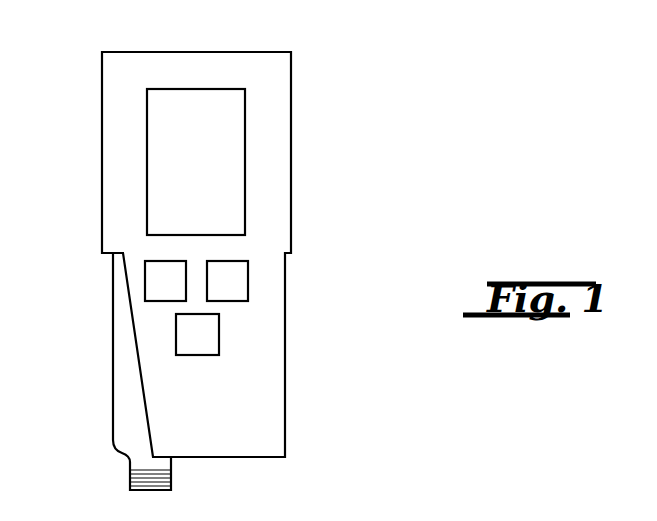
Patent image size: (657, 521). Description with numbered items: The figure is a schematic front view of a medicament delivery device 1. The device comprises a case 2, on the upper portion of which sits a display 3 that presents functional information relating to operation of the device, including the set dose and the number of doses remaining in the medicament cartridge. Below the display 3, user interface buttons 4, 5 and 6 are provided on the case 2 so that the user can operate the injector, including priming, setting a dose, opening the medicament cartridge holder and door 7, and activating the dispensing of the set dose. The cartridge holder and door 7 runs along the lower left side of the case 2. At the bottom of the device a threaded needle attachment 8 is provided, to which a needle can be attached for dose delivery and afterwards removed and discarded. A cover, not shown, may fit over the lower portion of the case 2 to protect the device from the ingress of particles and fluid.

The medicament delivery device 1 is at (35, 364).
The case 2 is at (292, 198).
The display 3 is at (199, 101).
The user interface button 4 is at (155, 275).
The user interface button 5 is at (237, 282).
The user interface button 6 is at (203, 332).
The medicament cartridge holder and door 7 is at (125, 399).
The threaded needle attachment 8 is at (165, 479).